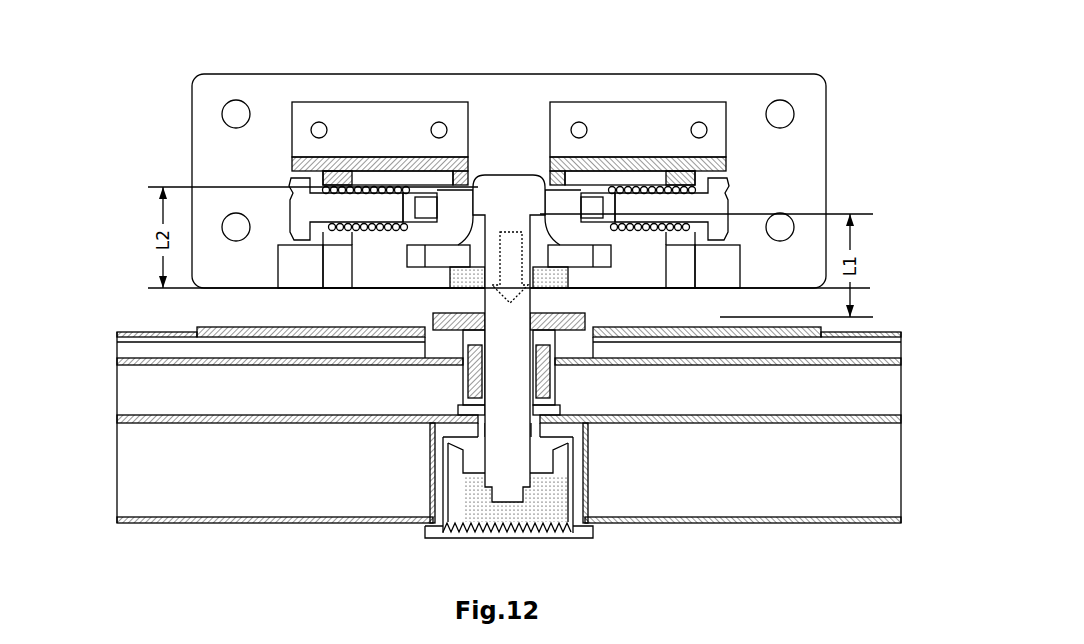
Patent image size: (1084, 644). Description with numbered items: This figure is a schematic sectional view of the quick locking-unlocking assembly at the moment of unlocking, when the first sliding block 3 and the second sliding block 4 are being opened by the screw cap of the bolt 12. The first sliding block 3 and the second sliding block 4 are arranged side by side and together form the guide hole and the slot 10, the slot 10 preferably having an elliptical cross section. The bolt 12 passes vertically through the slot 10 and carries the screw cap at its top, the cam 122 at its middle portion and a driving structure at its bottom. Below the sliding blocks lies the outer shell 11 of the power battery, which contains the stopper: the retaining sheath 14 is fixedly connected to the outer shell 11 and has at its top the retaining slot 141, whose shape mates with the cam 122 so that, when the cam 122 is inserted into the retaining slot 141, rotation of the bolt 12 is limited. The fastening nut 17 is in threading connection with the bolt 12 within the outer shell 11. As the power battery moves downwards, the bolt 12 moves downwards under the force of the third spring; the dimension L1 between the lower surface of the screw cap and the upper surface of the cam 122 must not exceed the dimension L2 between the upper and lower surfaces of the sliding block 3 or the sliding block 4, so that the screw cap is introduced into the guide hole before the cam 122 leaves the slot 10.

The first sliding block 3 is at (452, 198).
The second sliding block 4 is at (570, 198).
The slot 10 is at (555, 280).
The outer shell 11 is at (785, 425).
The bolt 12 is at (502, 328).
The cam 122 is at (550, 323).
The retaining sheath 14 is at (440, 355).
The retaining slot 141 is at (475, 338).
The fastening nut 17 is at (543, 460).